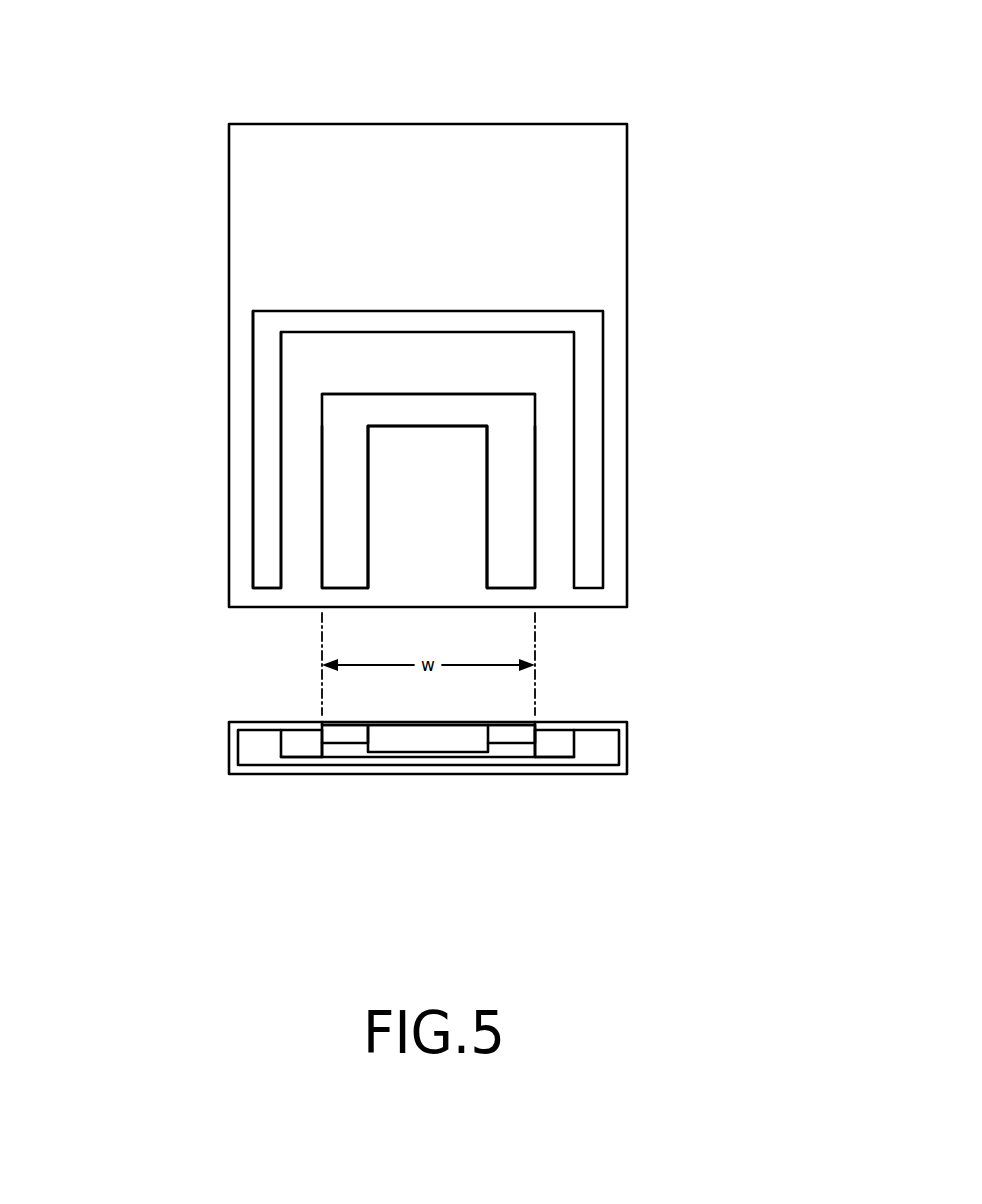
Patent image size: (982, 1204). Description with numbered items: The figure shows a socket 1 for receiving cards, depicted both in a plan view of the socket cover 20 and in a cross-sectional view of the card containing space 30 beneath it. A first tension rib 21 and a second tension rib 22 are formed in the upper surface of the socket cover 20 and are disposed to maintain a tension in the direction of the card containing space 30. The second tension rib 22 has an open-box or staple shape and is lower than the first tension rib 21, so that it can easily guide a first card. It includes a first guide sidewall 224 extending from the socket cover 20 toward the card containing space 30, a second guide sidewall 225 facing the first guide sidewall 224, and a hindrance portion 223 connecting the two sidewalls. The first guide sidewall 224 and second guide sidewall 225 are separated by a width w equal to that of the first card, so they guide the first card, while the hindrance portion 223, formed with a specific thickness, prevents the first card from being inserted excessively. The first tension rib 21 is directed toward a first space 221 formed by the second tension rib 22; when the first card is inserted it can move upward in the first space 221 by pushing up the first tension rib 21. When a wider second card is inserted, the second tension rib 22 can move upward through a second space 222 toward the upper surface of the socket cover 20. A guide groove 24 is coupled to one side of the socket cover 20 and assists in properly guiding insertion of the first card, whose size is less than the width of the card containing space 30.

The socket 1 is at (477, 303).
The socket cover 20 is at (586, 224).
The first tension rib 21 is at (453, 492).
The second tension rib 22 is at (515, 363).
The guide groove 24 is at (530, 722).
The card containing space 30 is at (598, 748).
The first space 221 is at (348, 430).
The second space 222 is at (270, 340).
The hindrance portion 223 is at (427, 393).
The first guide sidewall 224 is at (322, 477).
The second guide sidewall 225 is at (535, 508).